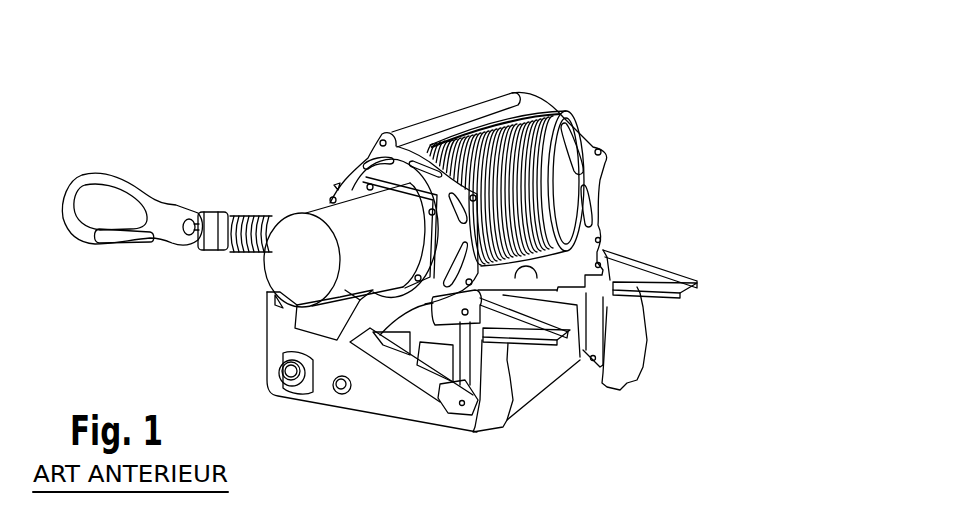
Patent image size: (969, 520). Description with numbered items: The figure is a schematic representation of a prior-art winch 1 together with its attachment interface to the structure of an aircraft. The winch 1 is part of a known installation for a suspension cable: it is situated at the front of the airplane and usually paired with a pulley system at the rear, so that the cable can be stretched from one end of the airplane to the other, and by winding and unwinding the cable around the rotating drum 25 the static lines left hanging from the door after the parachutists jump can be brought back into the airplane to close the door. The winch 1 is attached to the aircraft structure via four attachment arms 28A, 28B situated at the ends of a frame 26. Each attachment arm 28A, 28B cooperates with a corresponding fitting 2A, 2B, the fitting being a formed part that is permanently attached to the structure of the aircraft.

The winch 1 is at (483, 95).
The rotating drum 25 is at (557, 125).
The frame 26 is at (377, 317).
The attachment arm 28A is at (370, 328).
The attachment arm 28B is at (615, 265).
The fitting 2A is at (505, 378).
The fitting 2B is at (637, 360).